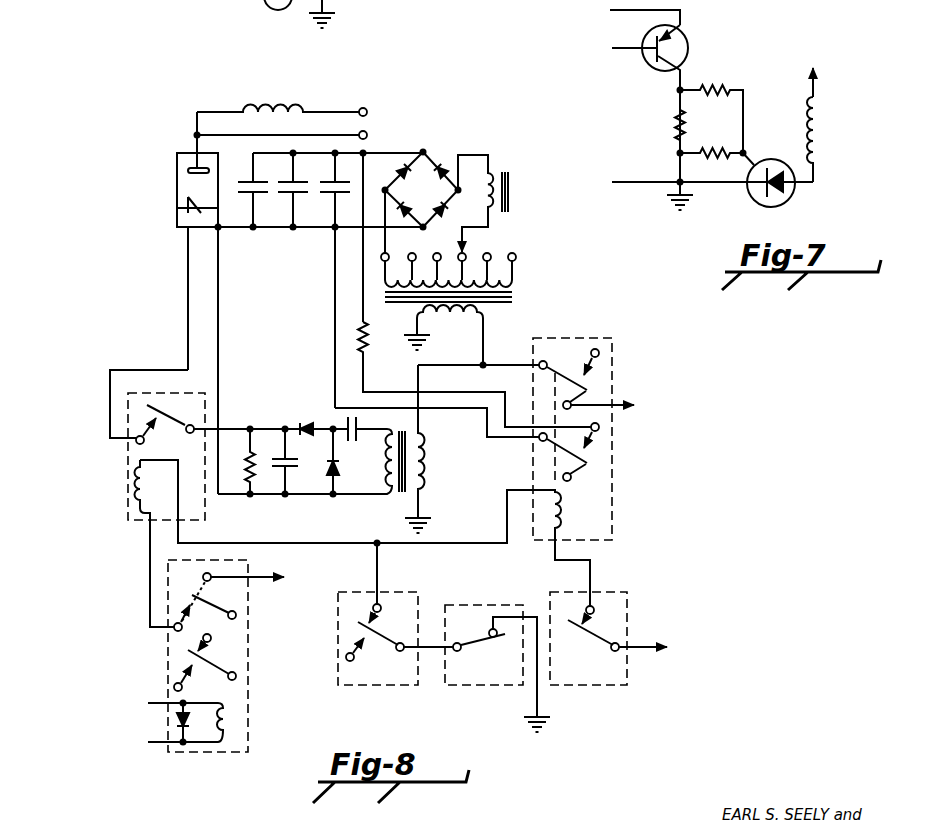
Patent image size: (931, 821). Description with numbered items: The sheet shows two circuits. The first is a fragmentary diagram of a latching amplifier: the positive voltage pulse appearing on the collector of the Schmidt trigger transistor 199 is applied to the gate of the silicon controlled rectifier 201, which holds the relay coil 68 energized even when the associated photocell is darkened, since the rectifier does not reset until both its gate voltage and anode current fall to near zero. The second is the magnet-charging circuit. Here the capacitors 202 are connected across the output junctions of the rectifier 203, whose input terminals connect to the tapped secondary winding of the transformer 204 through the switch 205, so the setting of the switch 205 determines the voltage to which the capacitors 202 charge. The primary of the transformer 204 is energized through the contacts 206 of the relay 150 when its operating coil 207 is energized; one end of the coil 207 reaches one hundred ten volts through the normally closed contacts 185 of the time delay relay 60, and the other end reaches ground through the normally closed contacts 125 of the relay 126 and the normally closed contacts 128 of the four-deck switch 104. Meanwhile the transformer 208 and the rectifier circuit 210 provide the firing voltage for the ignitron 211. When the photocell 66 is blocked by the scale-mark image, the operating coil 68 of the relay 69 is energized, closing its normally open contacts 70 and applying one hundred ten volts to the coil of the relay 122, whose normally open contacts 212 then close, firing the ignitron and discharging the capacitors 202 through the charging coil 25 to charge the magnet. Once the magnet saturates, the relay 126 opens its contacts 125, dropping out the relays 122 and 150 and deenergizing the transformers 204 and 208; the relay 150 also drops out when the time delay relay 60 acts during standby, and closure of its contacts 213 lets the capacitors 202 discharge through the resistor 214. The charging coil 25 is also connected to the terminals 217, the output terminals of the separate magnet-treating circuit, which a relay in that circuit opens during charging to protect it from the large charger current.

In FIG. 8, the photoconductive cell 66 is at (262, 10).
In FIG. 8, the charging coil 25 is at (275, 105).
In FIG. 8, the terminals 217 is at (369, 115).
In FIG. 8, the ignitron 211 is at (180, 150).
In FIG. 8, the capacitors 202 is at (262, 197).
In FIG. 8, the rectifier 203 is at (477, 127).
In FIG. 8, the switch 205 is at (470, 243).
In FIG. 8, the transformer 204 is at (583, 297).
In FIG. 8, the resistor 214 is at (356, 335).
In FIG. 8, the relay 122 is at (155, 388).
In FIG. 8, the normally open contacts 212 is at (168, 408).
In FIG. 8, the rectifier circuit 210 is at (300, 420).
In FIG. 8, the transformer 208 is at (497, 465).
In FIG. 8, the contacts 206 is at (592, 383).
In FIG. 8, the contacts 213 is at (592, 456).
In FIG. 8, the relay 150 is at (683, 488).
In FIG. 8, the relay operating coil 207 is at (568, 514).
In FIG. 8, the normally open contacts 70 is at (187, 597).
In FIG. 8, the relay 69 is at (166, 668).
In FIG. 8, the relay coil 68 is at (226, 713).
In FIG. 7, the relay coil 68 is at (800, 118).
In FIG. 8, the relay 126 is at (337, 620).
In FIG. 8, the normally closed contacts 125 is at (356, 628).
In FIG. 8, the four-deck switch 104 is at (520, 578).
In FIG. 8, the normally closed contacts 128 is at (490, 647).
In FIG. 8, the time delay relay 60 is at (690, 614).
In FIG. 8, the normally closed contacts 185 is at (580, 630).
In FIG. 7, the Schmidt trigger transistor 199 is at (688, 45).
In FIG. 7, the silicon controlled rectifier 201 is at (781, 160).